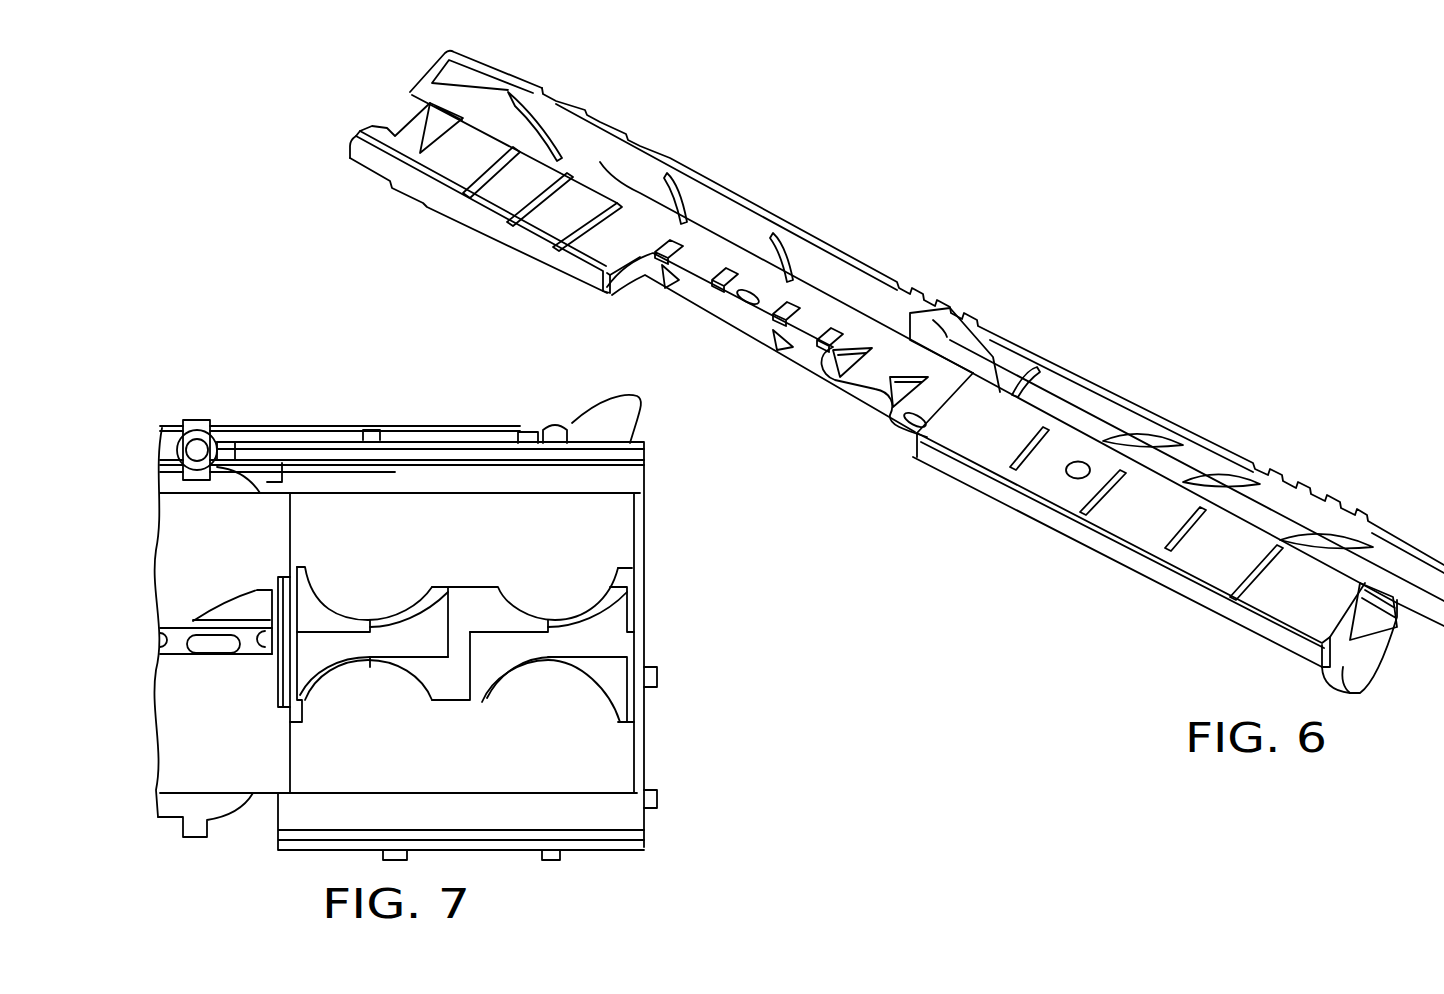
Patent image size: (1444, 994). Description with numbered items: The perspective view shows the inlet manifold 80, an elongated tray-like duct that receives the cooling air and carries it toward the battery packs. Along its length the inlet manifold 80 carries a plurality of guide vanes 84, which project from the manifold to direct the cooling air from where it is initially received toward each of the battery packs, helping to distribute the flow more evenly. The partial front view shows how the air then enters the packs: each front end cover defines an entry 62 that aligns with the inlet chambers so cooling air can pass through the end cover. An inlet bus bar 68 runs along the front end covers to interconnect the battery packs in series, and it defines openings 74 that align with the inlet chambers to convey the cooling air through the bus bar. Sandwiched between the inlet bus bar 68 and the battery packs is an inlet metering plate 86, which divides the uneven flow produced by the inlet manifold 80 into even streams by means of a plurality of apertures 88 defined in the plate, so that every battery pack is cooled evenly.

In FIG. 6, the inlet manifold 80 is at (352, 126).
In FIG. 6, the guide vanes 84 is at (572, 103).
In FIG. 7, the entry 62 is at (607, 637).
In FIG. 7, the inlet bus bar 68 is at (607, 750).
In FIG. 7, the inlet metering plate 86 is at (478, 612).
In FIG. 7, the apertures 88 is at (357, 643).
In FIG. 7, the openings 74 is at (478, 698).